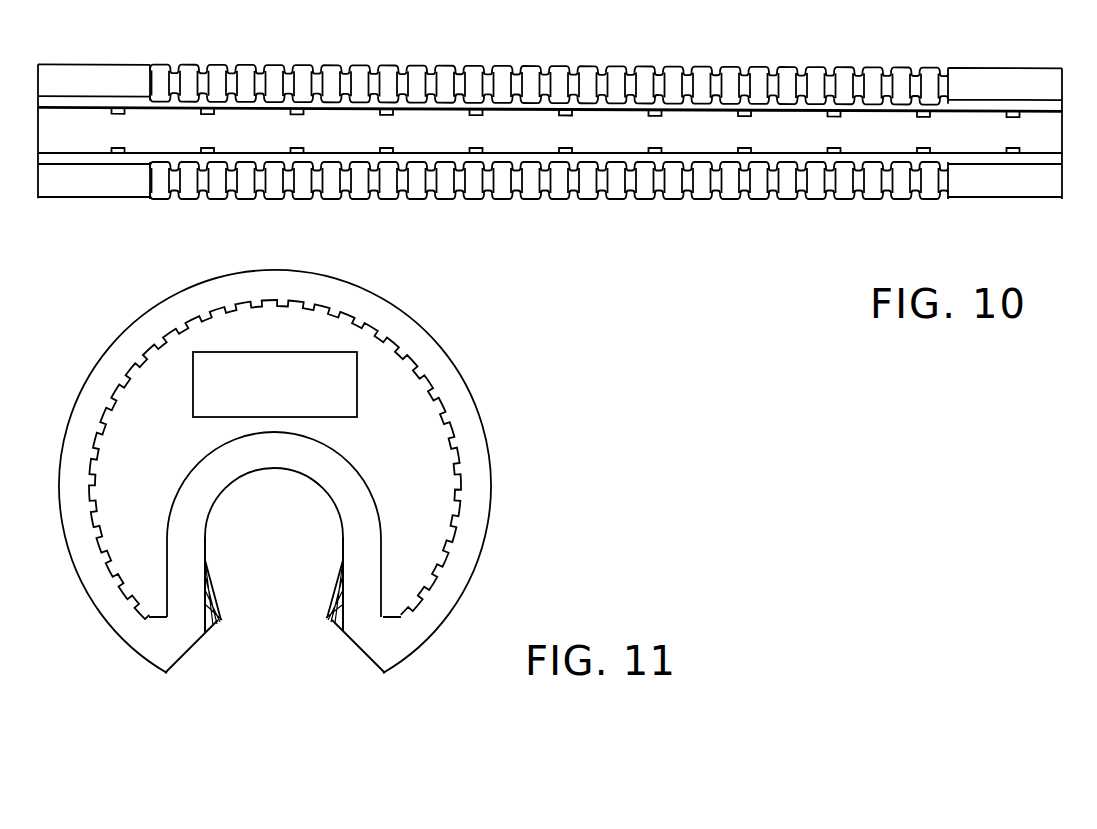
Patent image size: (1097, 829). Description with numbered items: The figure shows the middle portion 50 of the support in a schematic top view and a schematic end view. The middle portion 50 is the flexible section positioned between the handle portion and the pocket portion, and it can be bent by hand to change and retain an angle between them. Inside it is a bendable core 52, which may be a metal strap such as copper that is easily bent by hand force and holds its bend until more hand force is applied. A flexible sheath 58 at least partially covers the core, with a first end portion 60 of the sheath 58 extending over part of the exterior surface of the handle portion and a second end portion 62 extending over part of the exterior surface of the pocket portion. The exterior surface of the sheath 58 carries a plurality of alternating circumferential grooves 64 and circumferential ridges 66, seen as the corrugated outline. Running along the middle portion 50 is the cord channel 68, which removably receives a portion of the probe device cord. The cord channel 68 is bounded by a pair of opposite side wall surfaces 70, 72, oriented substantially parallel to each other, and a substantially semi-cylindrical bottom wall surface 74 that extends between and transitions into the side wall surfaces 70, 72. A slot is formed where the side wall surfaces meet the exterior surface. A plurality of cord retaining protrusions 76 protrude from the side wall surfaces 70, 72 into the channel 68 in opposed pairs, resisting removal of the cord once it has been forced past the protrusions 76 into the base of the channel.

In FIG. 10, the middle portion 50 is at (550, 183).
In FIG. 11, the bendable core 52 is at (313, 373).
In FIG. 11, the flexible sheath 58 is at (447, 345).
In FIG. 10, the first end portion of the sheath 60 is at (970, 200).
In FIG. 10, the second end portion of the sheath 62 is at (85, 200).
In FIG. 10, the circumferential grooves 64 is at (549, 212).
In FIG. 10, the circumferential ridges 66 is at (800, 198).
In FIG. 10, the cord channel 68 is at (550, 152).
In FIG. 11, the cord channel 68 is at (304, 537).
In FIG. 10, the side wall surface 70 is at (518, 120).
In FIG. 11, the side wall surface 70 is at (342, 536).
In FIG. 10, the side wall surface 72 is at (550, 206).
In FIG. 11, the side wall surface 72 is at (205, 536).
In FIG. 11, the bottom wall surface 74 is at (275, 470).
In FIG. 10, the cord retaining protrusions 76 is at (650, 152).
In FIG. 11, the cord retaining protrusions 76 is at (220, 610).